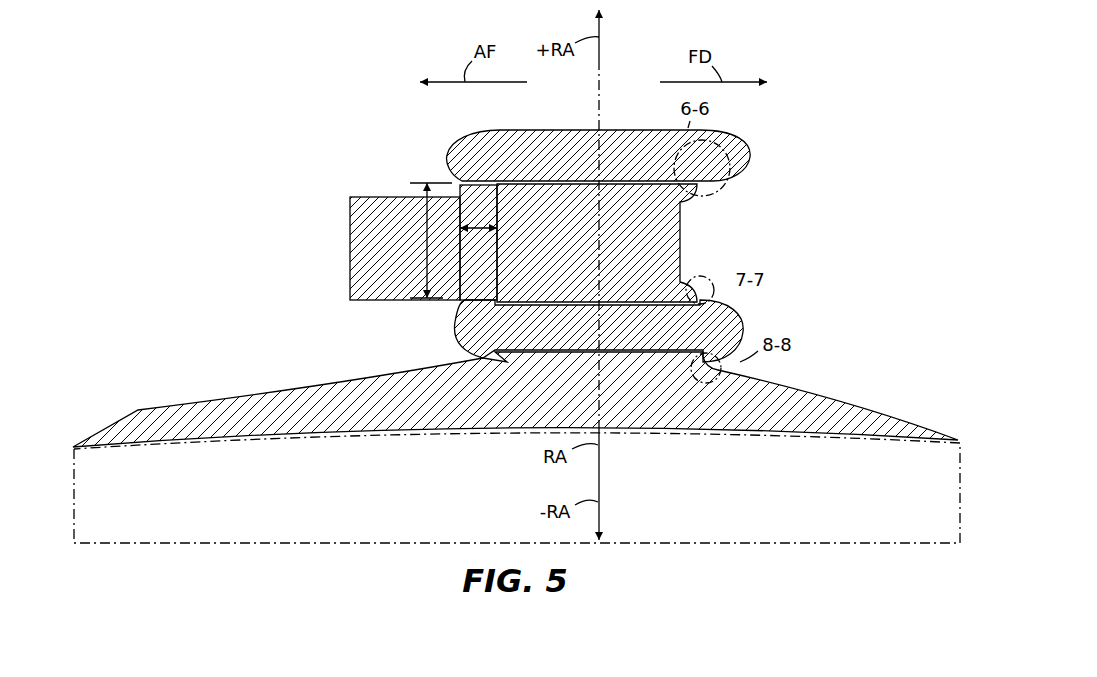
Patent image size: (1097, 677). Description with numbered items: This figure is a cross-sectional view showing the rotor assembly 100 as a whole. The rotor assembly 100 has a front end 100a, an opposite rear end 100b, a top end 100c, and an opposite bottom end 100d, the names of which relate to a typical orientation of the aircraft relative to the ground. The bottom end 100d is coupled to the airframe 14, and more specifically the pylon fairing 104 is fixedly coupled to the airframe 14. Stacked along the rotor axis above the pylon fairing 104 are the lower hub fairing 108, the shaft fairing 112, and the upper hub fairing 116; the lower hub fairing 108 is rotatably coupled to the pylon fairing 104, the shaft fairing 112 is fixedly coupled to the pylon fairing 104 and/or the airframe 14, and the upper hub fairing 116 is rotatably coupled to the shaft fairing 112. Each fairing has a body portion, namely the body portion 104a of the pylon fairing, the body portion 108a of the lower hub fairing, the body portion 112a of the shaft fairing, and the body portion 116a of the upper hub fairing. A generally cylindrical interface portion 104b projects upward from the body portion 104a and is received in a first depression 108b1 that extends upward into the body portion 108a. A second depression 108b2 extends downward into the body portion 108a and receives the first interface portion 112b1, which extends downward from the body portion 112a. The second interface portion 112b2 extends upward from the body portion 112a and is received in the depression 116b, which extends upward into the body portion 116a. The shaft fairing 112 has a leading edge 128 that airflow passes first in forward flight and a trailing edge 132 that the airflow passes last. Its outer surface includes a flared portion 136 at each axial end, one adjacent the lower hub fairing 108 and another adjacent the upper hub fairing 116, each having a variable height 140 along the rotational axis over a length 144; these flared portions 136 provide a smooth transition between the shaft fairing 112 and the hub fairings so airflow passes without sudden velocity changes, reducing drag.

The airframe 14 is at (253, 543).
The rotor assembly 100 is at (758, 108).
The front end 100a is at (895, 312).
The rear end 100b is at (92, 398).
The top end 100c is at (628, 116).
The bottom end 100d is at (642, 445).
The pylon fairing 104 is at (278, 413).
The body portion 104a is at (873, 400).
The interface portion 104b is at (717, 367).
The lower hub fairing 108 is at (470, 320).
The body portion 108a is at (705, 337).
The first depression 108b1 is at (712, 352).
The second depression 108b2 is at (700, 312).
The shaft fairing 112 is at (388, 215).
The body portion 112a is at (686, 221).
The first interface portion 112b1 is at (689, 288).
The second interface portion 112b2 is at (703, 197).
The upper hub fairing 116 is at (497, 141).
The body portion 116a is at (749, 151).
The depression 116b is at (697, 168).
The leading edge 128 is at (700, 229).
The trailing edge 132 is at (350, 242).
The flared portion 136 is at (450, 177).
The height 140 is at (417, 243).
The length 144 is at (480, 233).